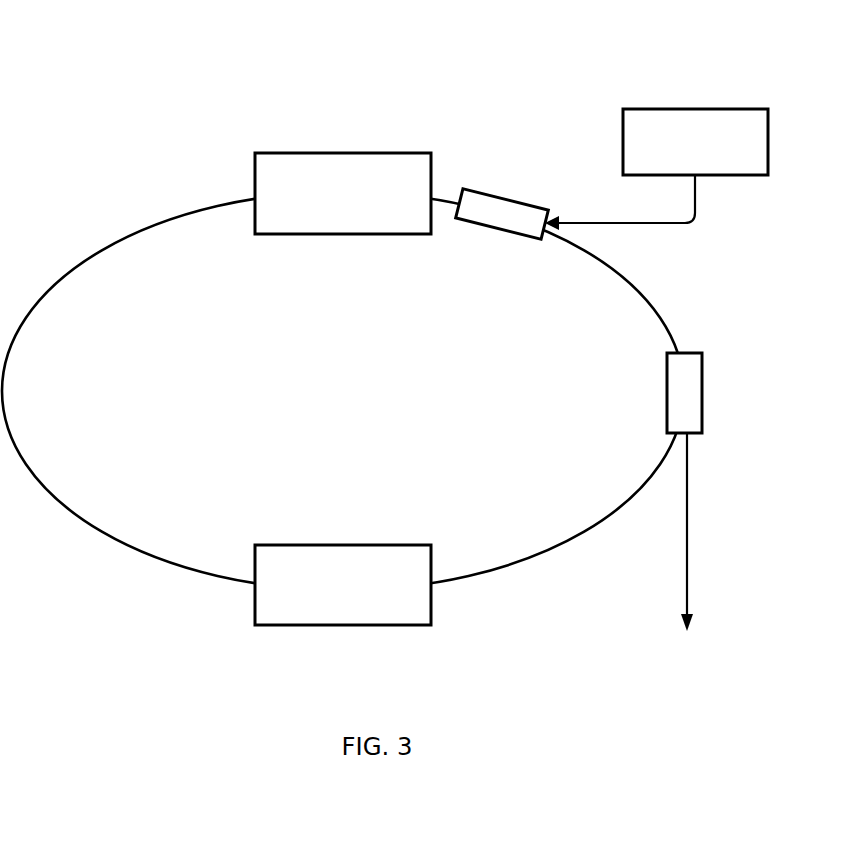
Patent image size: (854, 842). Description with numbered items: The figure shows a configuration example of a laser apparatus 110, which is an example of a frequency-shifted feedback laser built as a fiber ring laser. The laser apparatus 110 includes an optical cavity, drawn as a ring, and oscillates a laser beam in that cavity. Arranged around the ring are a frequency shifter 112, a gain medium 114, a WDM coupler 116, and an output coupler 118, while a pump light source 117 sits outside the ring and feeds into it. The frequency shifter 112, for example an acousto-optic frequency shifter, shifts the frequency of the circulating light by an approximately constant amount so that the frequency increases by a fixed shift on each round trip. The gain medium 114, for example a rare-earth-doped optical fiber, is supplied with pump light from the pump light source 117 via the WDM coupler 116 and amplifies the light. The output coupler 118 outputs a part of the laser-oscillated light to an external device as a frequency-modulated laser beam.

The laser apparatus 110 is at (464, 66).
The frequency shifter 112 is at (287, 545).
The gain medium 114 is at (287, 152).
The WDM coupler 116 is at (480, 190).
The pump light source 117 is at (652, 108).
The output coupler 118 is at (702, 388).